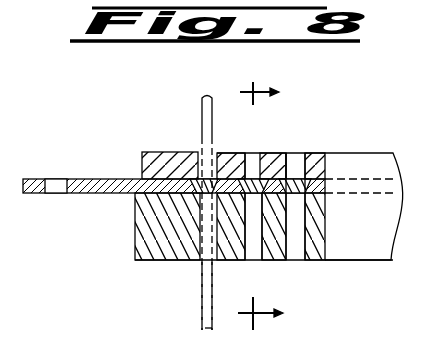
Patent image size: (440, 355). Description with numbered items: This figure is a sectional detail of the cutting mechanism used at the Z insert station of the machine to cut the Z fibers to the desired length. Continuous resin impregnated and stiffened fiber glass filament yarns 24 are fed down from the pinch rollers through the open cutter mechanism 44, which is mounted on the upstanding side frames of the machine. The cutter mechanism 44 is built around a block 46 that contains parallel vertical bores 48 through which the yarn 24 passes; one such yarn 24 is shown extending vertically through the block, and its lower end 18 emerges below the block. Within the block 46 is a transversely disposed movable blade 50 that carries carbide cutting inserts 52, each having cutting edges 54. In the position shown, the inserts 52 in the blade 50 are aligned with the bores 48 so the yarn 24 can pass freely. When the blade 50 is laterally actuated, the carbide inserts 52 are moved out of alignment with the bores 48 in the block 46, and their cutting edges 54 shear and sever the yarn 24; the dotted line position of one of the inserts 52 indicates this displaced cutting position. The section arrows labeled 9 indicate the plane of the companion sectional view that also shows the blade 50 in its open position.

The section line 9- 9 is at (273, 204).
The pin end 18 is at (200, 305).
The fiber glass filament yarns 24 is at (200, 114).
The cutter mechanism 44 is at (330, 152).
The block 46 is at (148, 152).
The parallel vertical bores 48 is at (257, 255).
The movable blade 50 is at (83, 176).
The carbide cutting inserts 52 is at (137, 203).
The cutting edges 54 is at (296, 190).